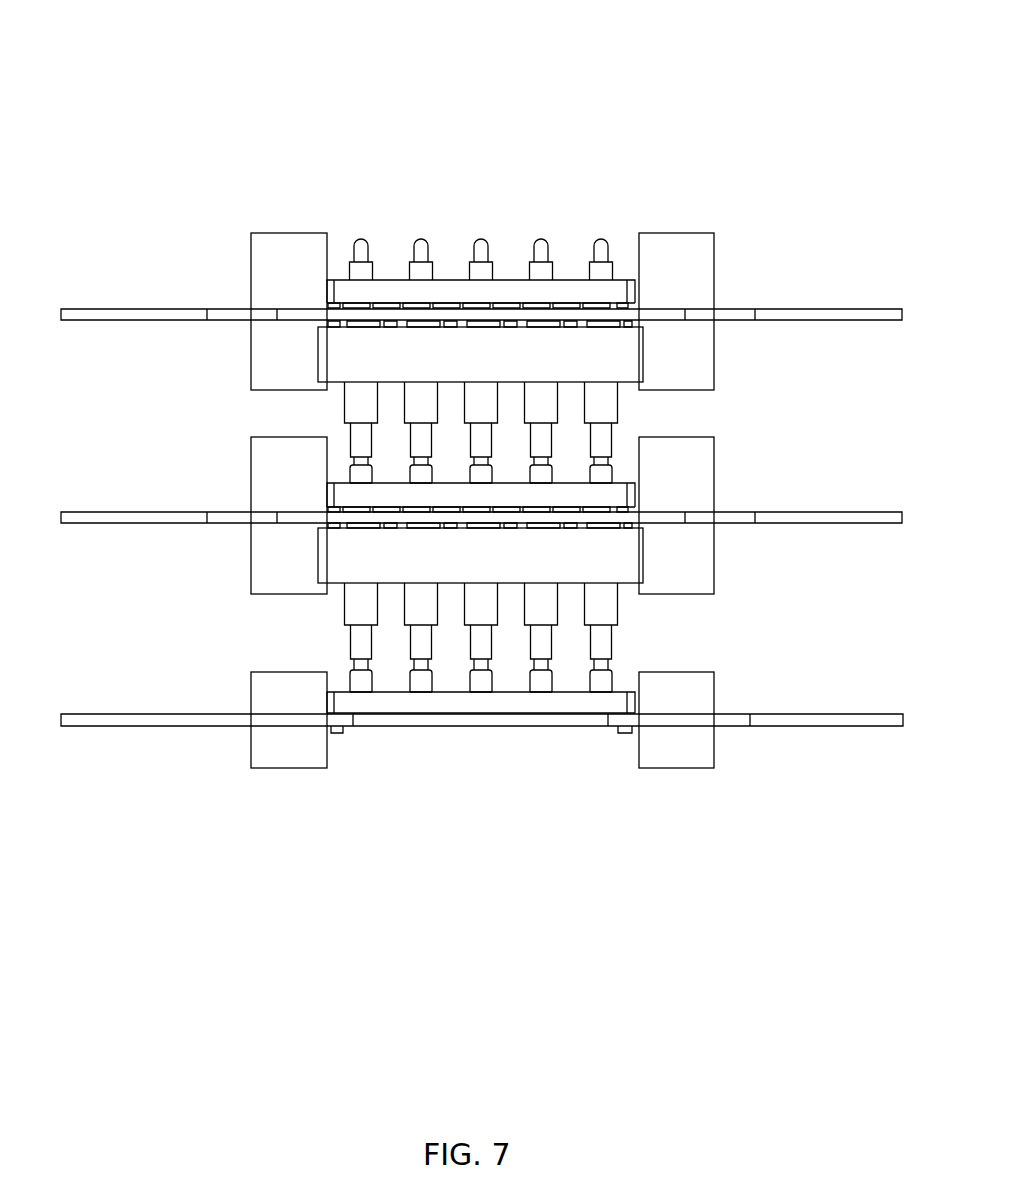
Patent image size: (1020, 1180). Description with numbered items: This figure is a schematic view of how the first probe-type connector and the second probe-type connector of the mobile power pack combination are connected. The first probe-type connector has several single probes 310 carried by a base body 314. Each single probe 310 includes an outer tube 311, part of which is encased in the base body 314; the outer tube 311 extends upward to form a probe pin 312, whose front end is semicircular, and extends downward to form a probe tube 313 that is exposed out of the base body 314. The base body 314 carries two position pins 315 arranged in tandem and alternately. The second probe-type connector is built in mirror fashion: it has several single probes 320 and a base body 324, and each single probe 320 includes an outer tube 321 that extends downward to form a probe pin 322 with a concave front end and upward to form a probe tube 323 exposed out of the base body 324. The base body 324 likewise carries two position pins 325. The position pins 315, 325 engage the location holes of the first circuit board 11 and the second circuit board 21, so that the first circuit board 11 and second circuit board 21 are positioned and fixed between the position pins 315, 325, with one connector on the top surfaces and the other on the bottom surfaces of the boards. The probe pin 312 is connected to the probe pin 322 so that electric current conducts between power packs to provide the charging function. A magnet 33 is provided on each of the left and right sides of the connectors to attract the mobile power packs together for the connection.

The single probe 310 is at (481, 155).
The outer tube 311 is at (426, 272).
The probe pin 312 is at (360, 253).
The probe tube 313 is at (483, 303).
The base body 314 is at (545, 297).
The position pin 315 is at (325, 305).
The single probe 320 is at (330, 409).
The outer tube 321 is at (361, 410).
The probe pin 322 is at (361, 447).
The probe tube 323 is at (333, 328).
The base body 324 is at (337, 370).
The position pin 325 is at (387, 527).
The magnet 33 is at (698, 268).
The second circuit board 21 is at (843, 310).
The first circuit board 11 is at (832, 720).